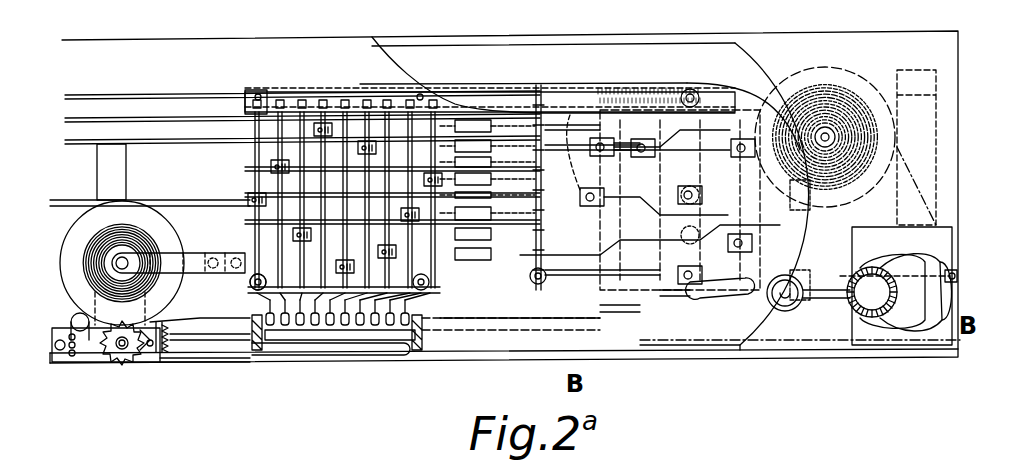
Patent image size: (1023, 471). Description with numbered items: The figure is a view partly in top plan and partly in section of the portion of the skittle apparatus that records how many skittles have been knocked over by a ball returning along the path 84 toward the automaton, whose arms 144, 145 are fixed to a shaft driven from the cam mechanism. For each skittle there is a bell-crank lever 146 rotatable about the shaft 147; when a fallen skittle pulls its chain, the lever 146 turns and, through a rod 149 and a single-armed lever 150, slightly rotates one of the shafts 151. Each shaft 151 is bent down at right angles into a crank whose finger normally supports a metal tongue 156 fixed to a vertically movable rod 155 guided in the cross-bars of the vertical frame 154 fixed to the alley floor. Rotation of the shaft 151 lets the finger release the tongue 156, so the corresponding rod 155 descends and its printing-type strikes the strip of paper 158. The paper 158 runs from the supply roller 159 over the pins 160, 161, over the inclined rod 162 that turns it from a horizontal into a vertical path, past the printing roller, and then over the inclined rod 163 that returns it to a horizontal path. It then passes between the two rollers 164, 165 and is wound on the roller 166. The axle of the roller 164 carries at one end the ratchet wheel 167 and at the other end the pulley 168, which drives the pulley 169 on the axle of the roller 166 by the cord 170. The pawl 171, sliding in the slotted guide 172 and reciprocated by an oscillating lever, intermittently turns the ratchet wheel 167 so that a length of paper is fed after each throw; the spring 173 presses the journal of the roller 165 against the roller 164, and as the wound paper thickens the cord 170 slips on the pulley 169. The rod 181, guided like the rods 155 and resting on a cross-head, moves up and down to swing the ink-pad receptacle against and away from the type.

The path 84 is at (712, 300).
The arm 144 is at (852, 262).
The arm 145 is at (836, 310).
The bell-crank lever 146 is at (548, 250).
The shaft 147 is at (530, 286).
The rod 149 is at (330, 112).
The single-armed lever 150 is at (257, 195).
The shaft 151 is at (262, 98).
The vertical frame 154 is at (423, 352).
The vertically movable rod 155 is at (315, 326).
The metal tongue 156 is at (432, 292).
The strip of paper 158 is at (562, 340).
The roller 159 is at (856, 76).
The pin 160 is at (959, 277).
The pin 161 is at (928, 330).
The rod 162 is at (392, 357).
The rod 163 is at (344, 342).
The roller 164 is at (130, 365).
The roller 165 is at (126, 368).
The roller 166 is at (72, 235).
The ratchet wheel 167 is at (128, 350).
The pulley 168 is at (150, 360).
The pulley 169 is at (148, 242).
The cord 170 is at (95, 300).
The pawl 171 is at (524, 322).
The slotted guide 172 is at (163, 320).
The spring 173 is at (92, 332).
The rod 181 is at (272, 326).